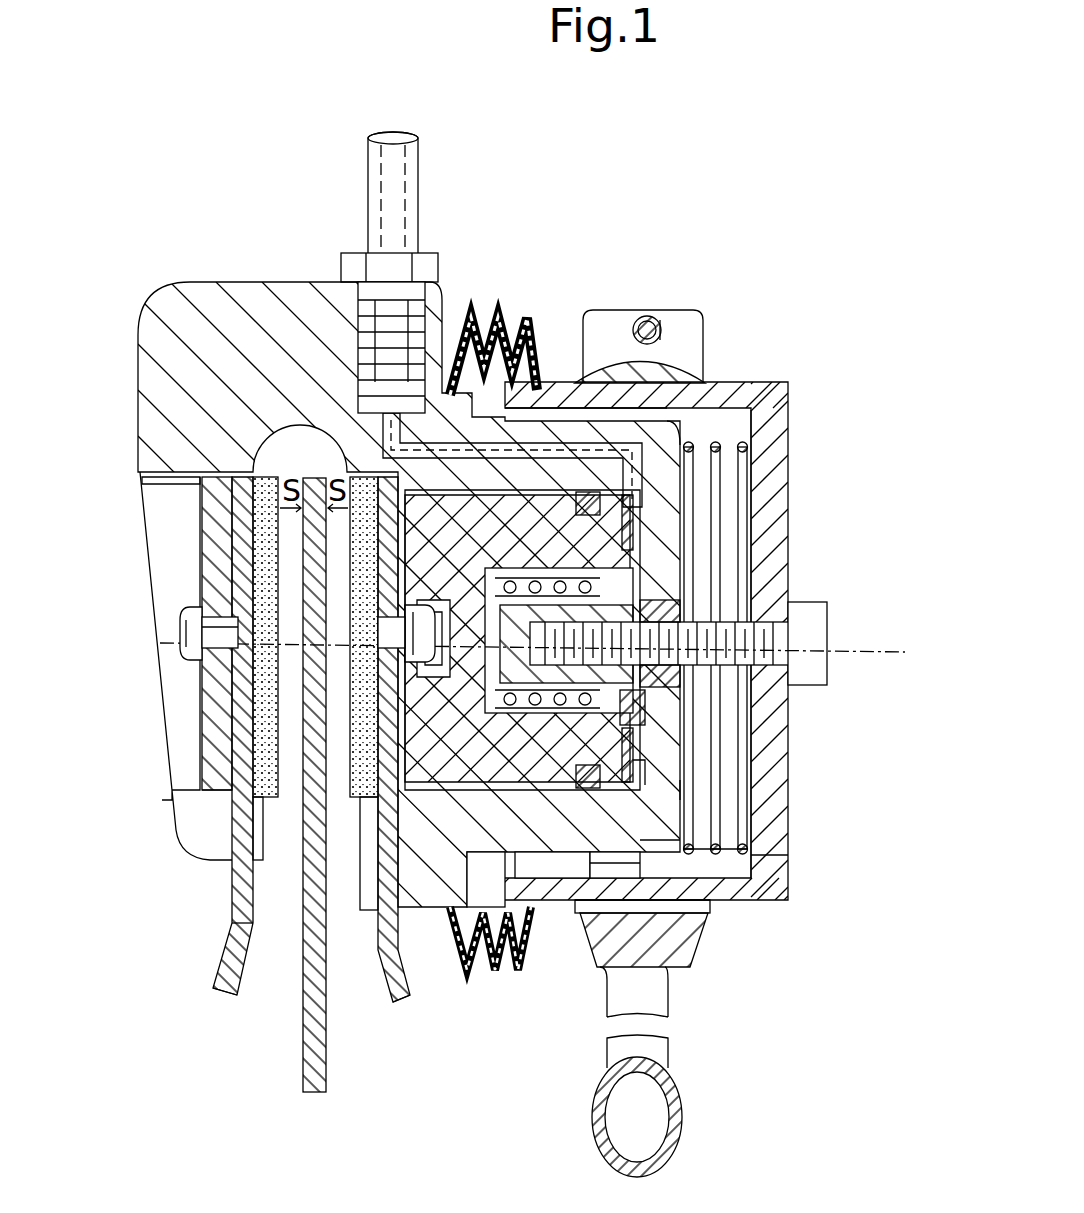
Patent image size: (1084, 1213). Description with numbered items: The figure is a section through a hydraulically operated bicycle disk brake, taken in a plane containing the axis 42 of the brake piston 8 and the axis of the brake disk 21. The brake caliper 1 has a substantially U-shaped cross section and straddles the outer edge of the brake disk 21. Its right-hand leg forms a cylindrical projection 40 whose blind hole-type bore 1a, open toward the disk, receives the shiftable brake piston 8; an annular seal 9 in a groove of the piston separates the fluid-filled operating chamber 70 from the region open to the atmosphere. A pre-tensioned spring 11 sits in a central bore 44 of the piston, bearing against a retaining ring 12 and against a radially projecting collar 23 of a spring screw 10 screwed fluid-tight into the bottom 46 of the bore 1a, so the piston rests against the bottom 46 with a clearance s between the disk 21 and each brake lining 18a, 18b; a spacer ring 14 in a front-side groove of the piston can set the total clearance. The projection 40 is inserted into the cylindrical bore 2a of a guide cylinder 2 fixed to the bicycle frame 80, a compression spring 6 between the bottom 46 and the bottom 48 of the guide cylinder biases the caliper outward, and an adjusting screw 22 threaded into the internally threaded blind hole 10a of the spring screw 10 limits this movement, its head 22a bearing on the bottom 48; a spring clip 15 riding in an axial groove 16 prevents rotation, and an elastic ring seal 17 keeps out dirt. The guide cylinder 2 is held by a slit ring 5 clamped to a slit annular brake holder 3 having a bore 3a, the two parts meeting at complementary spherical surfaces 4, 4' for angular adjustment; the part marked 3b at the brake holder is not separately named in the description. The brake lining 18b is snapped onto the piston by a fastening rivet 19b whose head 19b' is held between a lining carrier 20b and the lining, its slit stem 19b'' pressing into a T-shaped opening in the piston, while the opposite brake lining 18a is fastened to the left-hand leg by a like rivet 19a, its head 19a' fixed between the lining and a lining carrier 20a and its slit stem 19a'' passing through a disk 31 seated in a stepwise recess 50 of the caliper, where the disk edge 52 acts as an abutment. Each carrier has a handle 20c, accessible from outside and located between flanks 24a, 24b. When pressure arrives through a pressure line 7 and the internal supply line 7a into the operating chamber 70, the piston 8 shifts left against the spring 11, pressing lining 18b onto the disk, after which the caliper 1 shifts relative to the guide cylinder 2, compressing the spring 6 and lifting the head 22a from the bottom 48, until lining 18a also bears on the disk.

The brake caliper 1 is at (208, 300).
The blind hole-type bore 1a is at (515, 493).
The guide cylinder 2 is at (790, 388).
The cylindrical bore 2a is at (738, 420).
The annular brake holder 3 is at (597, 320).
The bore 3a is at (661, 330).
The bracket screw 3b is at (646, 318).
The spherical surface 4 is at (678, 327).
The spherical surface 4' is at (664, 1017).
The slit ring 5 is at (705, 940).
The helical compression spring 6 is at (760, 862).
The pressure line 7 is at (400, 155).
The internal supply line 7a is at (487, 447).
The brake piston 8 is at (549, 520).
The annular seal 9 is at (748, 834).
The spring screw 10 is at (660, 572).
The blind hole 10a is at (545, 705).
The spring 11 is at (640, 545).
The retaining ring 12 is at (650, 555).
The spacer ring 14 is at (648, 772).
The spring clip 15 is at (555, 868).
The groove 16 is at (592, 962).
The elastic ring seal 17 is at (470, 975).
The brake lining 18a is at (215, 522).
The brake lining 18b is at (262, 540).
The fastening rivet 19a is at (153, 652).
The rivet head 19a' is at (125, 602).
The slit stem 19a'' is at (152, 620).
The fastening rivet 19b is at (261, 671).
The rivet head 19b' is at (438, 593).
The rivet stem 19b'' is at (443, 677).
The lining carrier 20a is at (378, 833).
The lining carrier 20b is at (245, 858).
The handle 20c is at (405, 1000).
The brake disk 21 is at (305, 1052).
The adjusting screw 22 is at (790, 640).
The head of adjusting screw 22a is at (820, 603).
The collar 23 is at (576, 502).
The flank 24a is at (262, 862).
The flank 24b is at (365, 912).
The disk 31 is at (205, 745).
The cylindrical projection 40 is at (645, 838).
The axis 42 is at (553, 658).
The central bore 44 is at (680, 690).
The bottom 46 is at (700, 790).
The bottom 48 is at (762, 447).
The stepwise recess 50 is at (143, 480).
The disk edge 52 is at (198, 482).
The operating chamber 70 is at (660, 740).
The bicycle frame 80 is at (682, 1112).